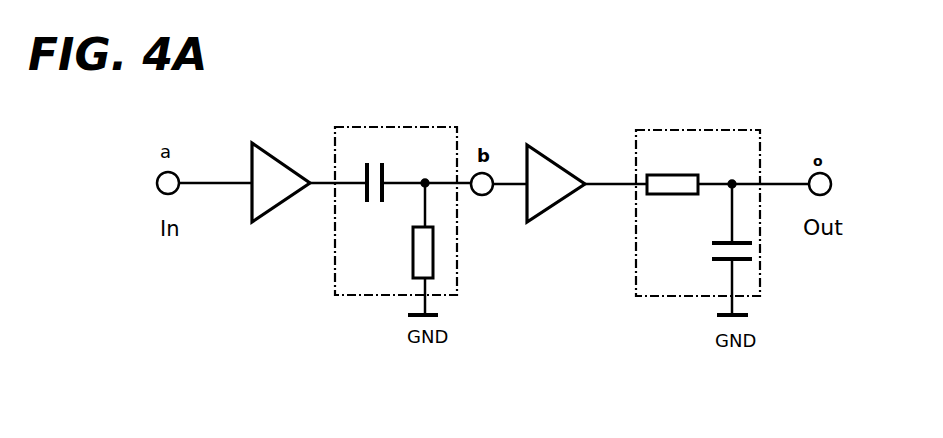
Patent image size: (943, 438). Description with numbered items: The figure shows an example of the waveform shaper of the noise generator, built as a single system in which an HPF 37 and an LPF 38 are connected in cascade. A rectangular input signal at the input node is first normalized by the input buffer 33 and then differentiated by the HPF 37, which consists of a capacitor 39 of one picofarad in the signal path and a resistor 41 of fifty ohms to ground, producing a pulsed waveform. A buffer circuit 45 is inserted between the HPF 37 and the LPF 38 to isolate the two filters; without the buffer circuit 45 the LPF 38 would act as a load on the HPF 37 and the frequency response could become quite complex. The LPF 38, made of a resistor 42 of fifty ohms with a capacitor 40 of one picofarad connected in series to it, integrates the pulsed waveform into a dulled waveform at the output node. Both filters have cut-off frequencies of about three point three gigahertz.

The input buffer 33 is at (278, 209).
The HPF 37 is at (363, 297).
The capacitor 39 is at (375, 163).
The resistor 41 is at (433, 263).
The buffer circuit 45 is at (558, 200).
The LPF 38 is at (672, 297).
The resistor 42 is at (667, 175).
The capacitor 40 is at (757, 250).